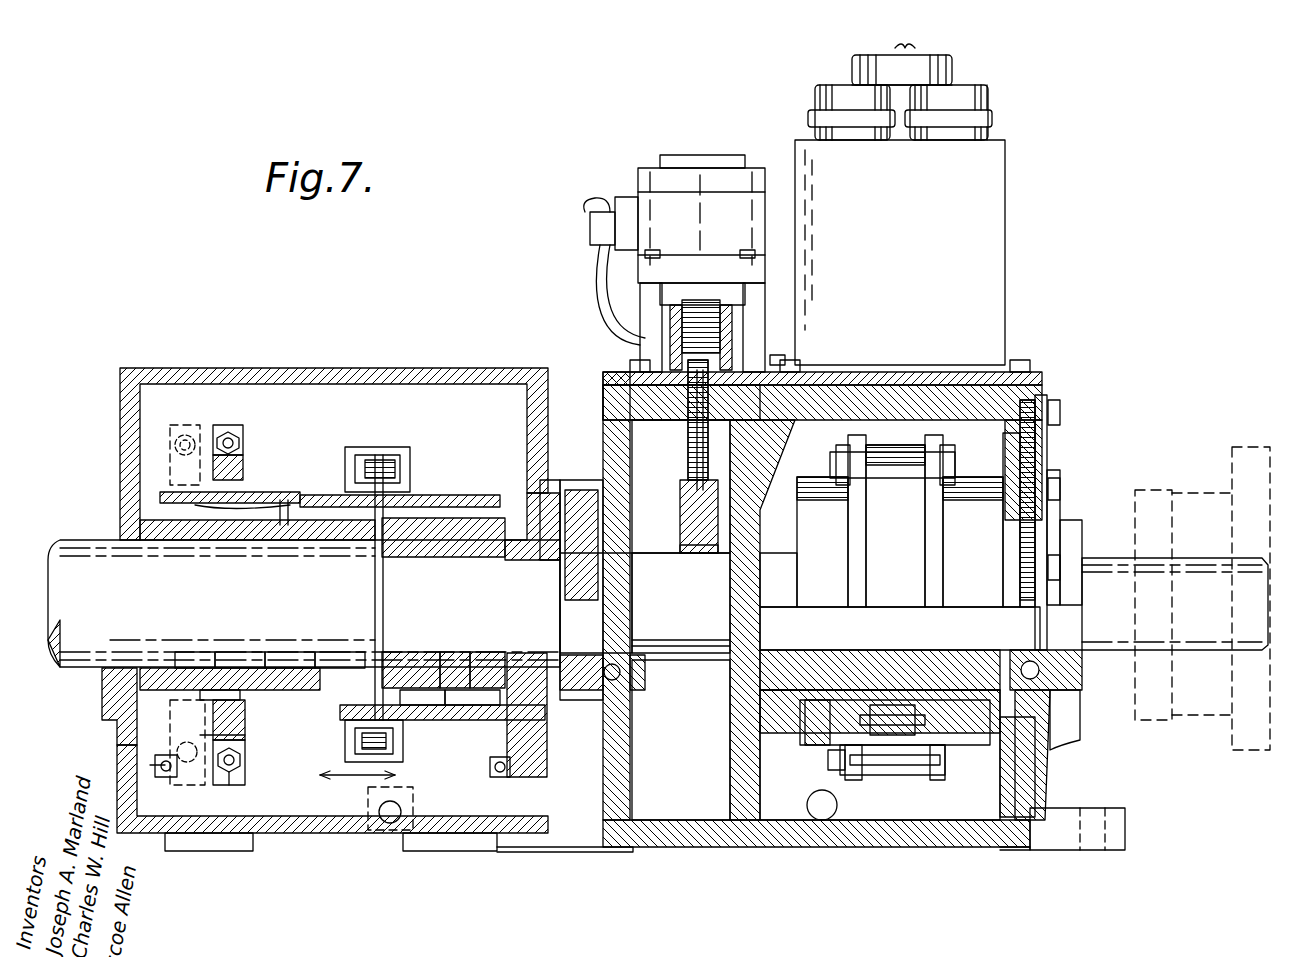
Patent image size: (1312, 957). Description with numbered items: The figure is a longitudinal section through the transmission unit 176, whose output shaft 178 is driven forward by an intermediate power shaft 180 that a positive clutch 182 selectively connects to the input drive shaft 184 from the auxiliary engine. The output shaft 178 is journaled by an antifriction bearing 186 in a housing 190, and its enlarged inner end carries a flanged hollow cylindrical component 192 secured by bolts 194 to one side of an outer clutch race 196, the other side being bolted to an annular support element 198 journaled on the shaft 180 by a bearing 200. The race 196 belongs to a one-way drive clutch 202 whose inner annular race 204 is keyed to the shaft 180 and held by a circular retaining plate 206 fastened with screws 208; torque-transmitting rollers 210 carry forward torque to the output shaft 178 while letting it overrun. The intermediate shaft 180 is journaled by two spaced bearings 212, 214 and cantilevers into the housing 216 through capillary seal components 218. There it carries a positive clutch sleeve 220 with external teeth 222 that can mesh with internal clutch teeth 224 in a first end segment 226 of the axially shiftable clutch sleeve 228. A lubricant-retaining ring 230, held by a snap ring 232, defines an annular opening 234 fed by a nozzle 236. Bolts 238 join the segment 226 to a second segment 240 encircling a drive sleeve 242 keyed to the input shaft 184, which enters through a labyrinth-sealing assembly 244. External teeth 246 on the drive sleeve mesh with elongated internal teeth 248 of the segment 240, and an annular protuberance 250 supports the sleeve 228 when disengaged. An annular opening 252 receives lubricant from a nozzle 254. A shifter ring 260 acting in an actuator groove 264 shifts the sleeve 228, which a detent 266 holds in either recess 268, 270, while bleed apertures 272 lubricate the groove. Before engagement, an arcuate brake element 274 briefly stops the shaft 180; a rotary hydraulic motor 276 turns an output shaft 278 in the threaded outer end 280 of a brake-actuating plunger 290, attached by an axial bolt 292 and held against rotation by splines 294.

The transmission unit 176 is at (232, 358).
The output shaft element 178 is at (1100, 558).
The intermediate power shaft 180 is at (645, 603).
The positive clutch 182 is at (418, 478).
The input drive shaft 184 is at (72, 540).
The antifriction bearing 186 is at (1058, 692).
The housing 190 is at (916, 847).
The flanged hollow cylindrical component 192 is at (1045, 746).
The bolts 194 is at (830, 760).
The outer clutch race 196 is at (892, 760).
The annular support element 198 is at (815, 725).
The antifriction bearing 200 is at (780, 652).
The one-way drive clutch 202 is at (838, 702).
The inner annular race 204 is at (945, 680).
The circular retaining plate 206 is at (978, 605).
The screws 208 is at (972, 650).
The torque-transmitting rollers 210 is at (877, 705).
The antifriction bearing 212 is at (730, 680).
The antifriction bearing 214 is at (632, 678).
The housing 216 is at (325, 835).
The capillary seal components 218 is at (530, 515).
The positive clutch sleeve 220 is at (428, 560).
The external teeth 222 is at (435, 652).
The internal clutch teeth 224 is at (440, 705).
The first end segment 226 is at (412, 722).
The axially shiftable clutch sleeve 228 is at (410, 770).
The lubricant-retaining ring 230 is at (490, 705).
The snap ring 232 is at (522, 652).
The annular opening 234 is at (478, 652).
The nozzle 236 is at (540, 772).
The bolts 238 is at (375, 770).
The second segment 240 is at (292, 718).
The drive sleeve 242 is at (222, 545).
The labyrinth-sealing assembly 244 is at (110, 668).
The external teeth 246 is at (248, 660).
The internal teeth 248 is at (300, 660).
The external annular protuberance 250 is at (340, 660).
The annular opening 252 is at (215, 700).
The nozzle 254 is at (172, 778).
The shifter ring 260 is at (240, 765).
The annular actuator groove 264 is at (215, 740).
The detent 266 is at (284, 530).
The recess 268 is at (205, 512).
The recess 270 is at (336, 545).
The bleed apertures 272 is at (200, 668).
The arcuate brake element 274 is at (680, 548).
The rotary hydraulic motor 276 is at (638, 200).
The rotary output shaft 278 is at (706, 300).
The internally threaded enlarged outer end 280 is at (640, 345).
The brake-actuating plunger 290 is at (688, 448).
The axial bolt 292 is at (706, 465).
The splines 294 is at (640, 412).